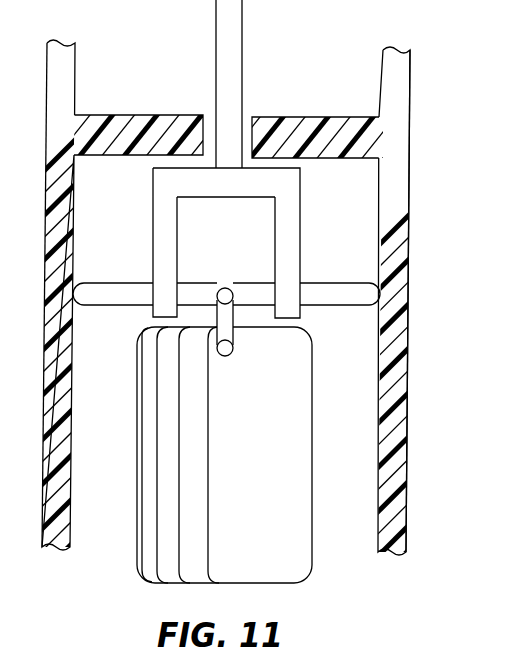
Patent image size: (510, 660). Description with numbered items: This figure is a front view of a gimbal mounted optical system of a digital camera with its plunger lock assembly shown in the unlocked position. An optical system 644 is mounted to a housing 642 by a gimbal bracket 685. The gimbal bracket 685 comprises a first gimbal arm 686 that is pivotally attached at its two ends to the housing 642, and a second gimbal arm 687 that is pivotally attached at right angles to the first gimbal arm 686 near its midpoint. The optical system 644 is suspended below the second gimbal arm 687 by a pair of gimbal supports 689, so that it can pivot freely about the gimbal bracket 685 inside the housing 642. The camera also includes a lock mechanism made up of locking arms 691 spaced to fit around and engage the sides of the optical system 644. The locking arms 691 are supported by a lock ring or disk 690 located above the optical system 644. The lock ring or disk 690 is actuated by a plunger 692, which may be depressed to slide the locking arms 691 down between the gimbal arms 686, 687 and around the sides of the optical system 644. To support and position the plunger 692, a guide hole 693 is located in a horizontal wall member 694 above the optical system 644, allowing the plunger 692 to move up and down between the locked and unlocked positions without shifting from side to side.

The housing 642 is at (410, 239).
The optical system 644 is at (312, 478).
The gimbal bracket 685 is at (314, 275).
The first gimbal arm 686 is at (340, 306).
The second gimbal arm 687 is at (233, 299).
The gimbal supports 689 is at (236, 356).
The lock ring or disk 690 is at (300, 178).
The locking arms 691 is at (275, 234).
The plunger 692 is at (242, 28).
The guide hole 693 is at (252, 118).
The horizontal wall member 694 is at (145, 115).